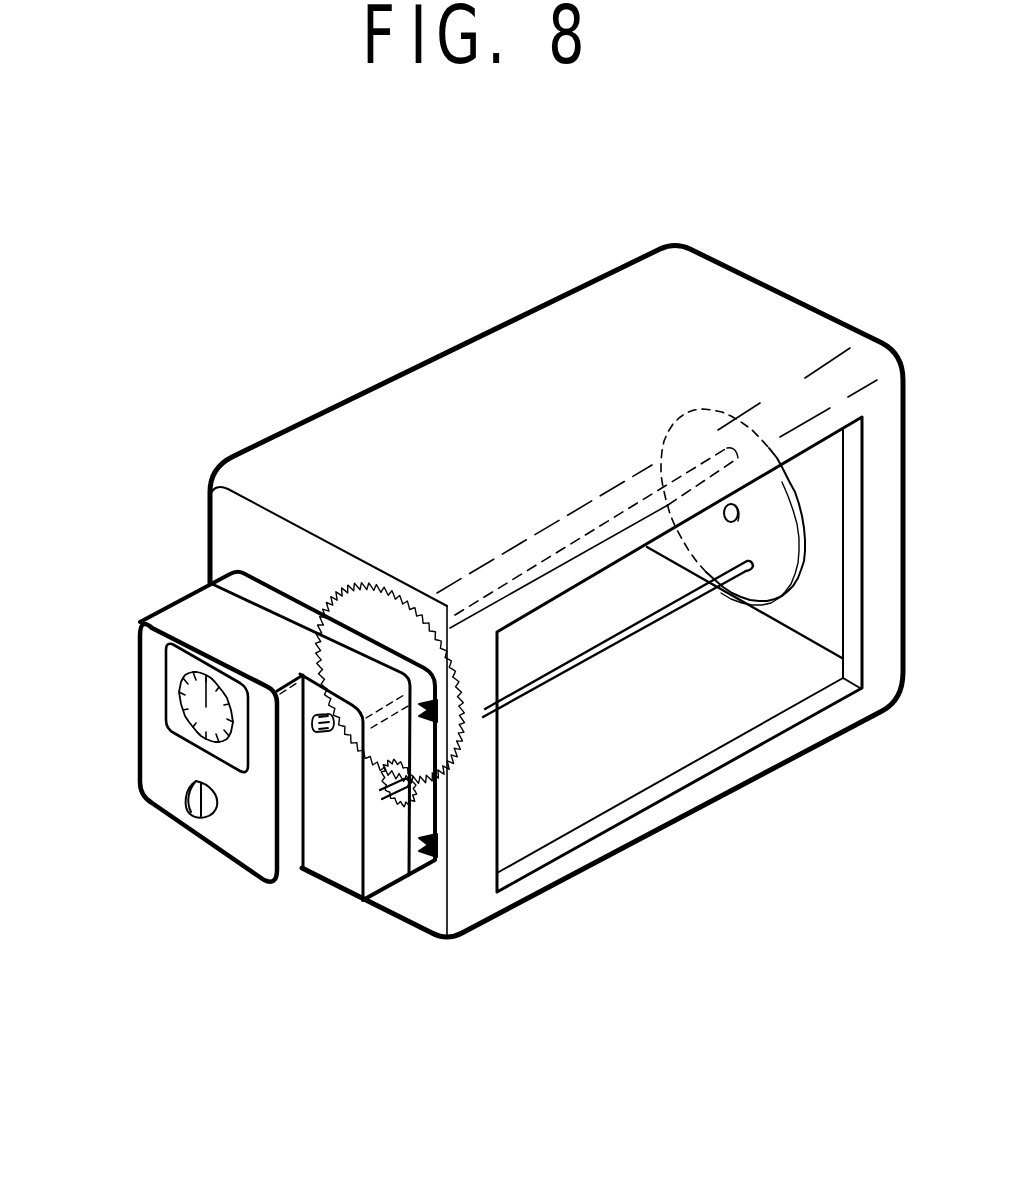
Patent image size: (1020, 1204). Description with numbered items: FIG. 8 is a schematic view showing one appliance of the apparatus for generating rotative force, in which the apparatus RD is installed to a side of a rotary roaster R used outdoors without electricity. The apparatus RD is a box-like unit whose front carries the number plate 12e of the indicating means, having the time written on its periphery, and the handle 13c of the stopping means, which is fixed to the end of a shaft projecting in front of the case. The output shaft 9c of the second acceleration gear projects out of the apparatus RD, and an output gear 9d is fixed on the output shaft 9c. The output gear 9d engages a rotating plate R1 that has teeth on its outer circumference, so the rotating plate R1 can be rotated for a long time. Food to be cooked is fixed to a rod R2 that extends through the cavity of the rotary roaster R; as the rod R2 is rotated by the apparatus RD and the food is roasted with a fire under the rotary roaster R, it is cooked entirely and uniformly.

The rotary roaster R is at (433, 340).
The rotating plate R1 is at (363, 592).
The rod R2 is at (587, 653).
The apparatus RD is at (199, 860).
The number plate 12e is at (172, 707).
The handle 13c is at (321, 737).
The output shaft 9c is at (388, 798).
The output gear 9d is at (417, 790).